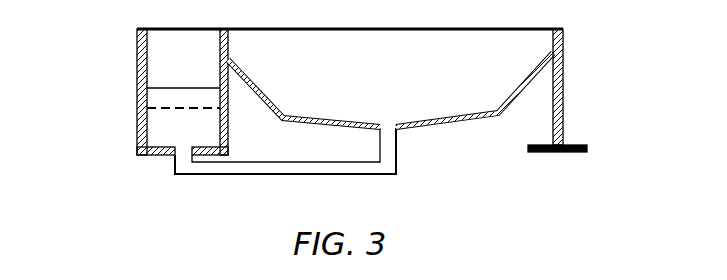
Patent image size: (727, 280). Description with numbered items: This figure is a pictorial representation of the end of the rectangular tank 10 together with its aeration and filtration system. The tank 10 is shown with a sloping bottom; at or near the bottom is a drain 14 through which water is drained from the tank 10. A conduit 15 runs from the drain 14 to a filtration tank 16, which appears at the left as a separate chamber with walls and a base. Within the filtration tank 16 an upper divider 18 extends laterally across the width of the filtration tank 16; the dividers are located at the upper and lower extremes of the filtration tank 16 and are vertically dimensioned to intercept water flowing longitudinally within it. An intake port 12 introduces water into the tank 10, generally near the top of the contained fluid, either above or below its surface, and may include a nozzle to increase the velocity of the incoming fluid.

The tank 10 is at (563, 42).
The intake port 12 is at (162, 88).
The drain 14 is at (388, 122).
The conduit 15 is at (193, 177).
The filtration tank 16 is at (137, 52).
The upper divider 18 is at (150, 110).